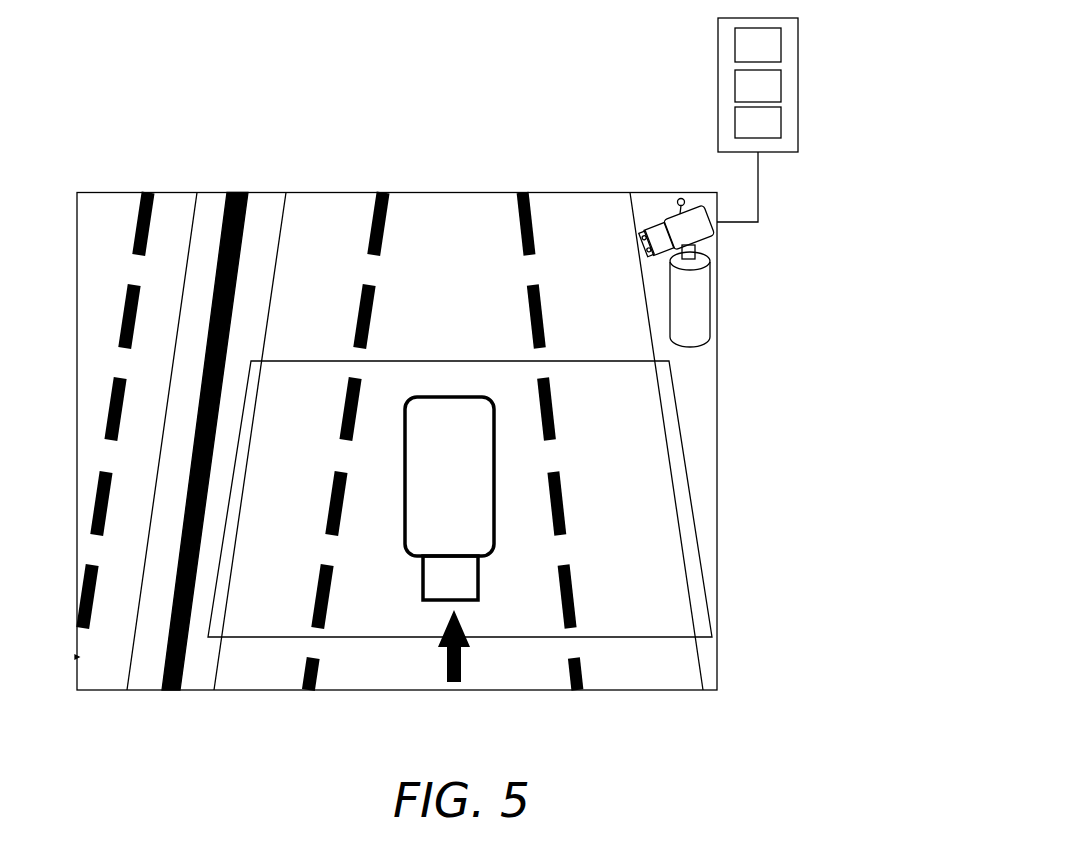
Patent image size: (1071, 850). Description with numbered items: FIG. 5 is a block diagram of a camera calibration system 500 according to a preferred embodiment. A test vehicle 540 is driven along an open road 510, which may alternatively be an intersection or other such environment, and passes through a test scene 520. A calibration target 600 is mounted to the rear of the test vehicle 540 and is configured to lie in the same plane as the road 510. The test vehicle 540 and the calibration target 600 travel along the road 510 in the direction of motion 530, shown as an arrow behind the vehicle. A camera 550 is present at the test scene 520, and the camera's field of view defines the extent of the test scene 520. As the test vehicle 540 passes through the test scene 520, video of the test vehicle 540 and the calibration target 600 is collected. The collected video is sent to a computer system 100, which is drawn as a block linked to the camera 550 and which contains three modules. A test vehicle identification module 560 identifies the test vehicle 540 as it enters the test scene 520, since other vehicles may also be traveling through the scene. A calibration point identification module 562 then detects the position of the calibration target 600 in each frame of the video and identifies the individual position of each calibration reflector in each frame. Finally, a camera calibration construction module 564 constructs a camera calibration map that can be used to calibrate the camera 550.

The computer system 100 is at (786, 120).
The camera calibration system 500 is at (233, 131).
The open road 510 is at (432, 236).
The test scene 520 is at (452, 361).
The direction of motion 530 is at (463, 665).
The test vehicle 540 is at (494, 485).
The camera 550 is at (710, 247).
The test vehicle identification module 560 is at (758, 45).
The calibration point identification module 562 is at (758, 86).
The camera calibration construction module 564 is at (758, 122).
The calibration target 600 is at (422, 577).